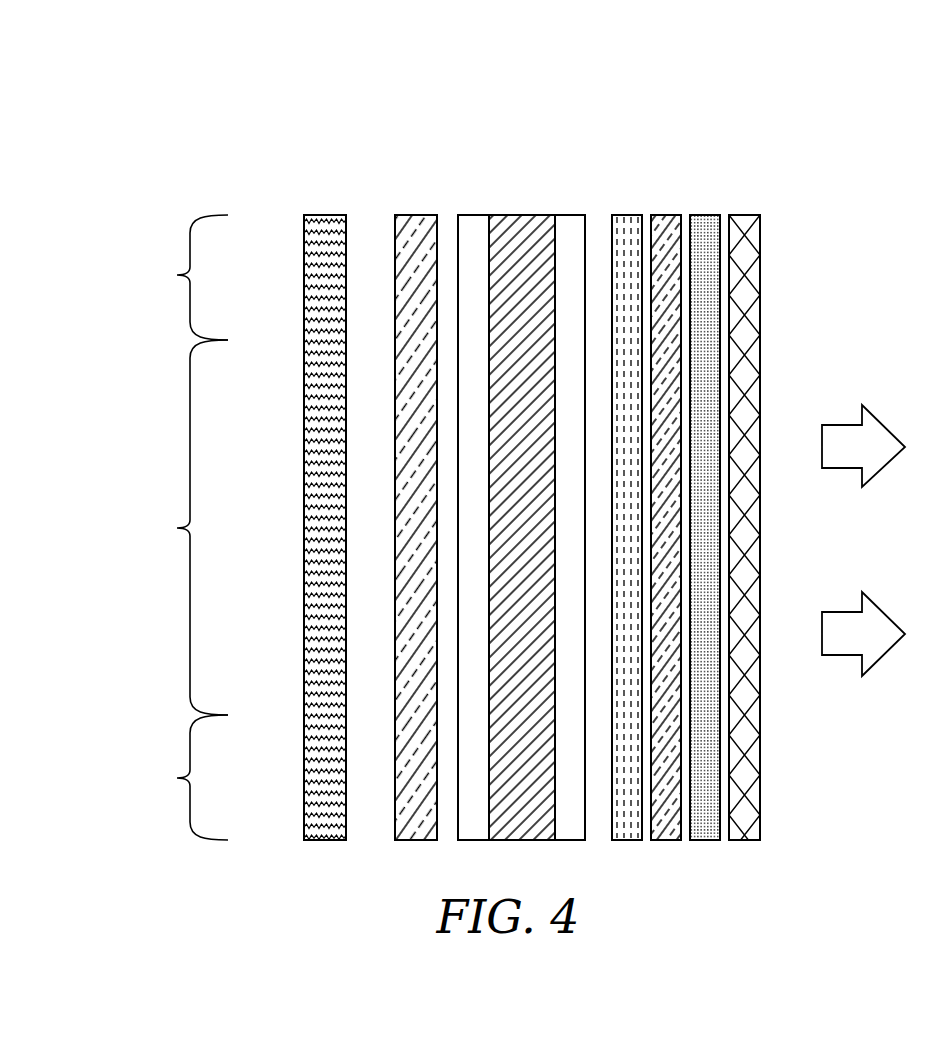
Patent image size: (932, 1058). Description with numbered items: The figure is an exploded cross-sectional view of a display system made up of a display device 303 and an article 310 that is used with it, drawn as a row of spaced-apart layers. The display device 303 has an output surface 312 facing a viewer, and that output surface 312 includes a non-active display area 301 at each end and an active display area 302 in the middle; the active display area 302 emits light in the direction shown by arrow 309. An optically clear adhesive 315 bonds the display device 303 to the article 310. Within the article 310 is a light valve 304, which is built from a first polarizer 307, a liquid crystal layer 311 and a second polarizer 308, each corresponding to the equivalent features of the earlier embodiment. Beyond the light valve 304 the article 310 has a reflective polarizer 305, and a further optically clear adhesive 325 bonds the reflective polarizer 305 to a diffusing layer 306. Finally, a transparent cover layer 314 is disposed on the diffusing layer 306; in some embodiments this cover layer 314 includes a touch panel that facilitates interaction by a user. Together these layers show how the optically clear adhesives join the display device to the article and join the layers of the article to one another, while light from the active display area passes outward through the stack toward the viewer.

The non-active display area 301 is at (177, 275).
The active display area 302 is at (177, 528).
The display device 303 is at (287, 180).
The light valve 304 is at (521, 465).
The reflective polarizer 305 is at (625, 226).
The diffusing layer 306 is at (703, 223).
The first polarizer 307 is at (474, 224).
The second polarizer 308 is at (565, 500).
The arrow 309 is at (845, 425).
The article 310 is at (722, 92).
The liquid crystal layer 311 is at (512, 224).
The output surface 312 is at (344, 228).
The cover layer 314 is at (747, 222).
The optically clear adhesive 315 is at (413, 227).
The optically clear adhesive 325 is at (667, 222).